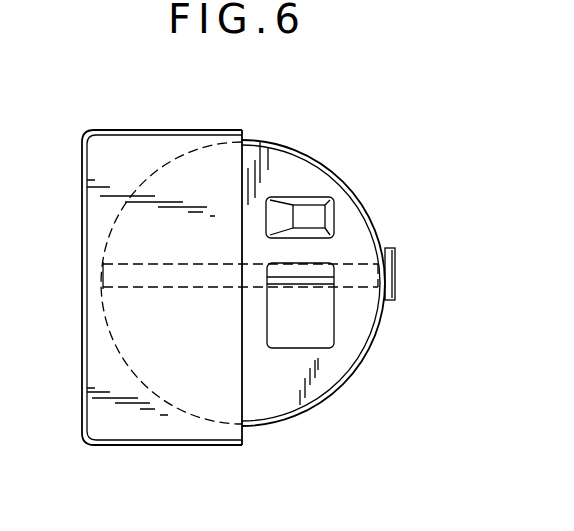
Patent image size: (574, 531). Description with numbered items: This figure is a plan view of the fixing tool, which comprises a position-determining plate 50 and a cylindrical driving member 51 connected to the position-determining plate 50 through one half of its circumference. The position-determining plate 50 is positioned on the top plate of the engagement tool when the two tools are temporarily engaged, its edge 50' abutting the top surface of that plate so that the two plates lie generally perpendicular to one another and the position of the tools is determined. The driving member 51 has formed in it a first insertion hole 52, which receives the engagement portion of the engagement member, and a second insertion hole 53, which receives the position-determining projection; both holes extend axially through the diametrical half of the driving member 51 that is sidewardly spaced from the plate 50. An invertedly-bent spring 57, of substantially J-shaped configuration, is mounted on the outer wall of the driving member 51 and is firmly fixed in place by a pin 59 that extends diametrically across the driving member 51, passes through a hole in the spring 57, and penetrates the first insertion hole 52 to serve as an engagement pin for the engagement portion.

The position-determining plate 50 is at (162, 258).
The edge 50' is at (313, 264).
The cylindrical driving member 51 is at (280, 388).
The first insertion hole 52 is at (322, 342).
The second insertion hole 53 is at (315, 210).
The invertedly-bent spring 57 is at (396, 252).
The pin 59 is at (352, 292).